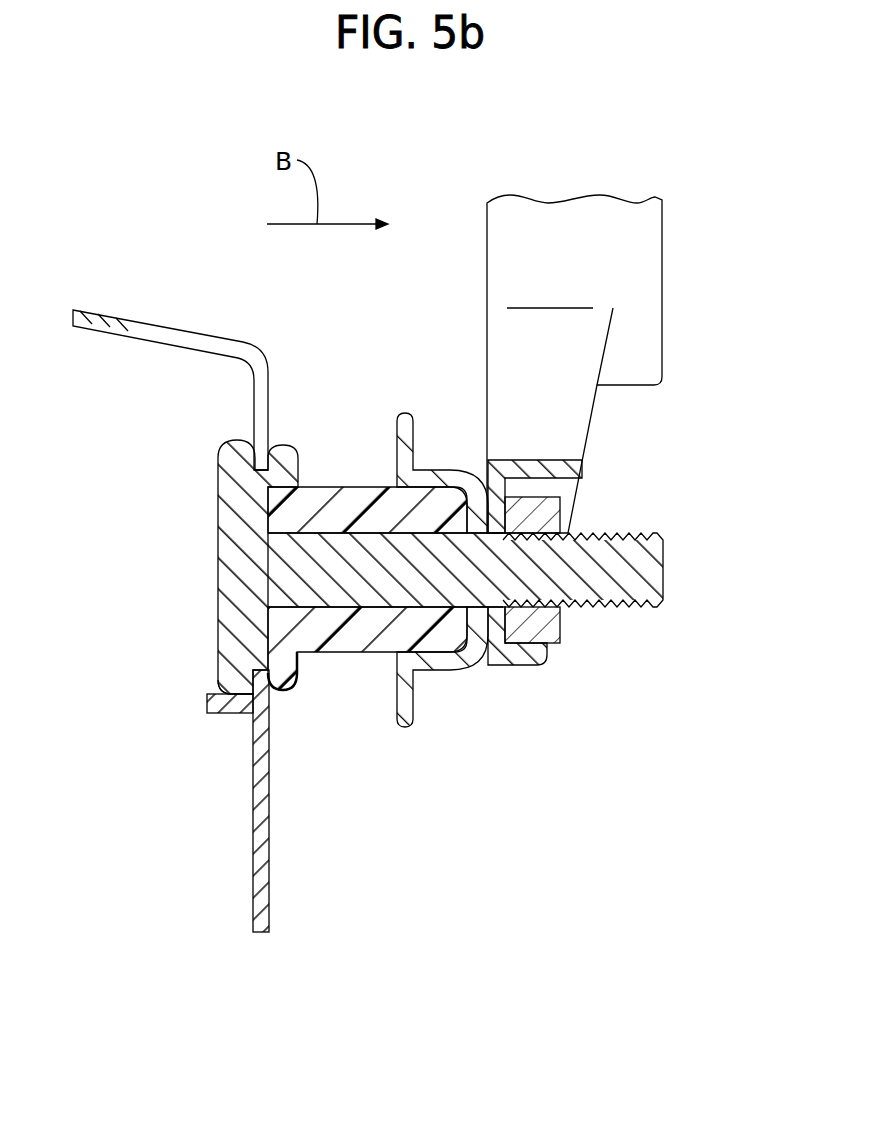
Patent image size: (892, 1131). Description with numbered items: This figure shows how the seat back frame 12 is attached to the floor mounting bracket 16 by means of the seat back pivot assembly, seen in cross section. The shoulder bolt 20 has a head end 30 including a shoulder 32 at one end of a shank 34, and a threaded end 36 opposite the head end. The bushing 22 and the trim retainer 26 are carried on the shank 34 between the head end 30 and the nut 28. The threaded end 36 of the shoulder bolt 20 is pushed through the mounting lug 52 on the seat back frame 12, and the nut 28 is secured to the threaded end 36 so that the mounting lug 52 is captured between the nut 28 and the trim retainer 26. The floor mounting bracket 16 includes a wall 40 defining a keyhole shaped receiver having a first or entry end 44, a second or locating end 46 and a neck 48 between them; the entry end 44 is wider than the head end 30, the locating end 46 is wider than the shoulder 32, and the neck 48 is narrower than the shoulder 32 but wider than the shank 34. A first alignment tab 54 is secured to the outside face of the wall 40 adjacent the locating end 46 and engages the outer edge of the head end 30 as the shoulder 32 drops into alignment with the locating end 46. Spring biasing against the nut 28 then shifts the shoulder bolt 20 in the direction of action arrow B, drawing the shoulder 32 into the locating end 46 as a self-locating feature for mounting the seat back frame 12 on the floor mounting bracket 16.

The seat back frame 12 is at (629, 364).
The floor mounting bracket 16 is at (247, 587).
The shoulder bolt 20 is at (426, 573).
The bushing 22 is at (367, 573).
The trim retainer 26 is at (442, 476).
The nut 28 is at (535, 622).
The head end 30 is at (226, 545).
The shoulder 32 is at (262, 663).
The shank 34 is at (413, 583).
The threaded end 36 is at (638, 567).
The wall 40 is at (265, 820).
The first or entry end 44 is at (175, 338).
The second or locating end 46 is at (275, 692).
The neck 48 is at (260, 440).
The mounting lug 52 is at (560, 398).
The first alignment tab 54 is at (223, 708).